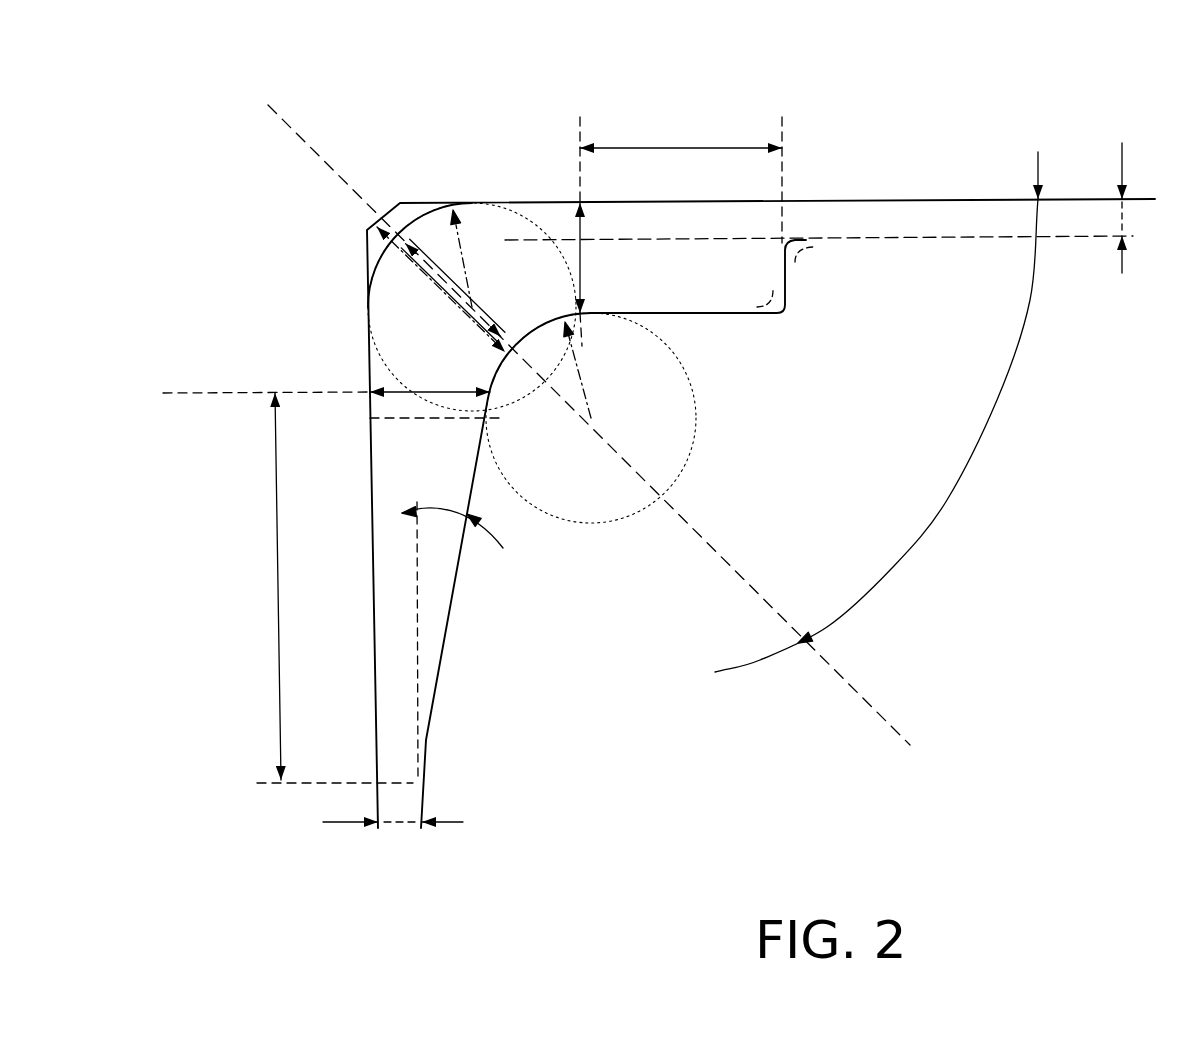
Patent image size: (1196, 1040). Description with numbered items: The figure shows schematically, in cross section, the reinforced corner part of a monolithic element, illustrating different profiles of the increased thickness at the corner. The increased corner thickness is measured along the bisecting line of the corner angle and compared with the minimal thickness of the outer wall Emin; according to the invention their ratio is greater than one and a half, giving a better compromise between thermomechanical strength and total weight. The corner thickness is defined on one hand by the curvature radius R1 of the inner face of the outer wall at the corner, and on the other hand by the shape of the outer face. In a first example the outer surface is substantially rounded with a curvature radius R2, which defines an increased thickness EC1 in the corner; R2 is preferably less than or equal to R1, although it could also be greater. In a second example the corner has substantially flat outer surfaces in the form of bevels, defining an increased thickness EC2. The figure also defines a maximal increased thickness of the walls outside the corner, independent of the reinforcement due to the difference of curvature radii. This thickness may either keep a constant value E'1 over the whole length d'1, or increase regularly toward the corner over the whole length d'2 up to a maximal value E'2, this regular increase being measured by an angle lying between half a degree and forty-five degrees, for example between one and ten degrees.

The maximal increased thickness of constant value E'1 is at (542, 196).
The length of constant increased thickness d'1 is at (681, 167).
The curvature radius of outer corner surface R2 is at (465, 251).
The increased corner thickness with beveled outer surface EC2 is at (432, 283).
The increased corner thickness with rounded outer surface EC1 is at (515, 300).
The curvature radius of inner face at corner R1 is at (582, 392).
The maximal increased thickness with regular variation E'2 is at (331, 364).
The length of regularly increasing thickness d'2 is at (304, 588).
The minimal thickness of the outer wall Emin is at (1118, 210).